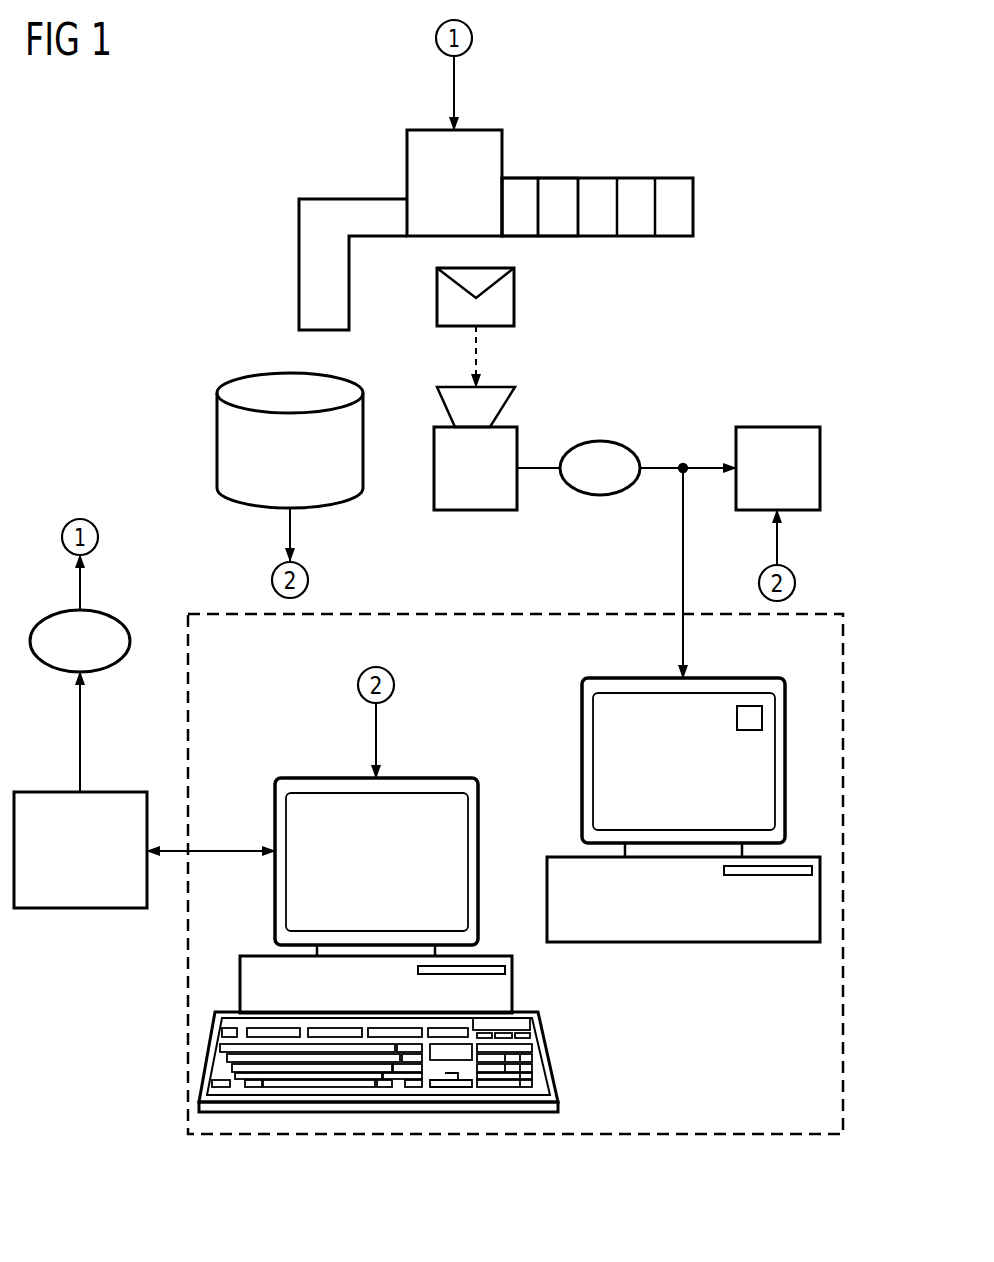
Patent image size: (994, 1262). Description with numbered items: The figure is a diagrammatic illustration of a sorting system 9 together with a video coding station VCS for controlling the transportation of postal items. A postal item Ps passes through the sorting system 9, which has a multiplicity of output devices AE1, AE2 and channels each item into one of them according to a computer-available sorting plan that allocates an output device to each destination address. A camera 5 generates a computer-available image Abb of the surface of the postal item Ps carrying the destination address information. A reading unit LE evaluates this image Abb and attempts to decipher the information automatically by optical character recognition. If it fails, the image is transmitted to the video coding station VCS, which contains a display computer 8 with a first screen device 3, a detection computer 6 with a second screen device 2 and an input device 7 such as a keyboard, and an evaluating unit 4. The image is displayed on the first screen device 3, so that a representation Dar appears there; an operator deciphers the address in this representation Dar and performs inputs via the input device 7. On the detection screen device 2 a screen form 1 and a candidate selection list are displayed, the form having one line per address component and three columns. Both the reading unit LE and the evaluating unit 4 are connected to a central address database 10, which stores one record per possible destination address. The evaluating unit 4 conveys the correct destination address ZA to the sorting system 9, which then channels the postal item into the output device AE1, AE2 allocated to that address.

The screen form 1 is at (428, 793).
The second screen device 2 is at (376, 824).
The first screen device 3 is at (651, 733).
The evaluating unit 4 is at (82, 909).
The camera 5 is at (480, 512).
The detection computer 6 is at (557, 982).
The input device 7 is at (552, 1052).
The display computer 8 is at (715, 953).
The sorting system 9 is at (355, 158).
The central address database 10 is at (253, 388).
The first output device AE1 is at (527, 167).
The second output device AE2 is at (605, 167).
The postal item Ps is at (514, 298).
The image Abb is at (598, 440).
The reading unit LE is at (775, 425).
The destination address ZA is at (51, 613).
The representation Dar is at (717, 705).
The video coding station VCS is at (188, 1040).